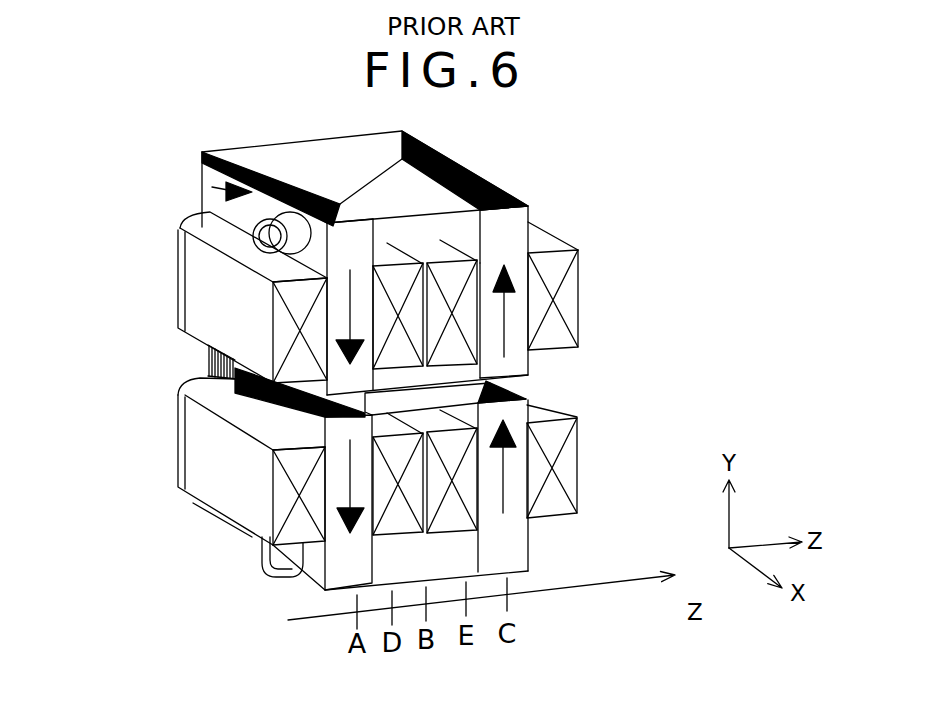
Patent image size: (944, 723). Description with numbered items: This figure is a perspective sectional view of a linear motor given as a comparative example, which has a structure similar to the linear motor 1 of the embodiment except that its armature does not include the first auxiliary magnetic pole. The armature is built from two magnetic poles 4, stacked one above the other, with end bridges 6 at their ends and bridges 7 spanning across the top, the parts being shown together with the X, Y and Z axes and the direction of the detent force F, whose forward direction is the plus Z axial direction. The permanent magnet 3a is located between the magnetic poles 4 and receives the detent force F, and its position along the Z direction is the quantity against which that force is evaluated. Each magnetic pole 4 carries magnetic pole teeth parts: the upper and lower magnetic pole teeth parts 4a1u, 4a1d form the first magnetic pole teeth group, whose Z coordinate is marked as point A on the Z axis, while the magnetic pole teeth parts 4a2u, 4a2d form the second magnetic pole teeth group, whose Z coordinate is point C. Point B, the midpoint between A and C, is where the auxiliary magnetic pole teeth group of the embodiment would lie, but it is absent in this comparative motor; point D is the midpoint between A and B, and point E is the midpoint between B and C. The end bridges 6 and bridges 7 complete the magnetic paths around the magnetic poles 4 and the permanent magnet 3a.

The linear motor 1 is at (733, 639).
The permanent magnet 3a is at (462, 392).
The magnetic pole 4 is at (495, 568).
The magnetic pole teeth part 4a1u is at (237, 369).
The magnetic pole teeth part 4a1d is at (313, 413).
The magnetic pole teeth part 4a2u is at (510, 365).
The magnetic pole teeth part 4a2d is at (510, 412).
The end bridge 6 is at (568, 300).
The bridge 7 is at (305, 162).